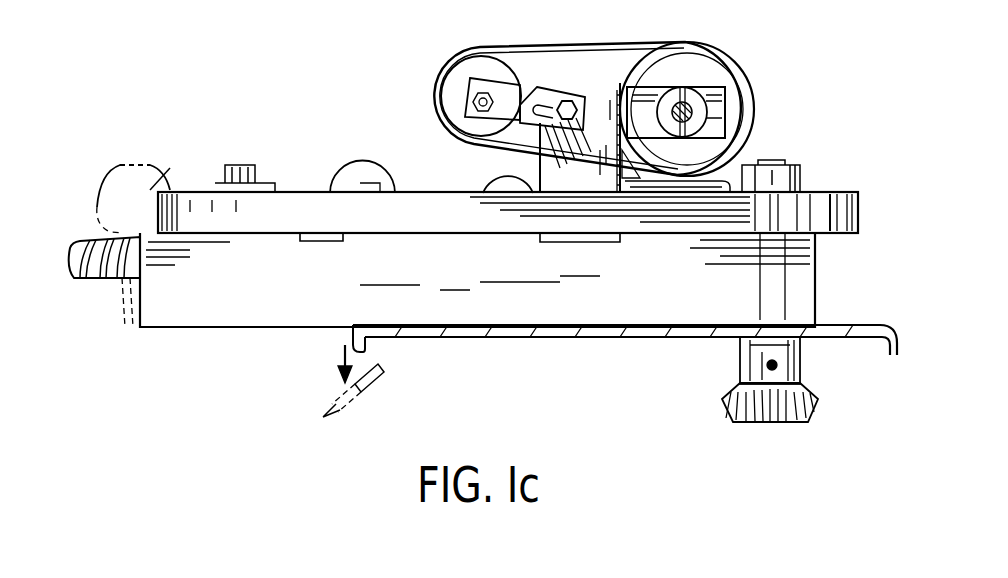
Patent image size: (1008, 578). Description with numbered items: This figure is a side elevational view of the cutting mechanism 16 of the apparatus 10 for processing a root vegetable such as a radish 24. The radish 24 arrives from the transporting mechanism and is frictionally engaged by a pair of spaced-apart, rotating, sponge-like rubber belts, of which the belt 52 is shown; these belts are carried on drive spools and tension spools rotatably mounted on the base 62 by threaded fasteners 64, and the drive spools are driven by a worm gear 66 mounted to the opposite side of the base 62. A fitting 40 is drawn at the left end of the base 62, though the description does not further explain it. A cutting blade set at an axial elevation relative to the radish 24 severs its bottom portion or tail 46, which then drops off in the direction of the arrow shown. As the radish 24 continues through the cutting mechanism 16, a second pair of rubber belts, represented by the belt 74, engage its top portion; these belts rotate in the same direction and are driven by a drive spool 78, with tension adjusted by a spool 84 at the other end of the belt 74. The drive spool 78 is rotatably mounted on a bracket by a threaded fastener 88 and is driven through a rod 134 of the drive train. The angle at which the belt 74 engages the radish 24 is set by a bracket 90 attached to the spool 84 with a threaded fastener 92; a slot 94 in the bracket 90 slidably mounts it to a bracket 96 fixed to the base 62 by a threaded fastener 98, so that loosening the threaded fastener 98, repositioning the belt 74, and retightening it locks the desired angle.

The apparatus 10 is at (146, 90).
The cutting mechanism 16 is at (833, 85).
The radish 24 is at (163, 172).
The hose fitting 40 is at (83, 278).
The tail 46 is at (372, 377).
The belt 52 is at (830, 216).
The base 62 is at (190, 310).
The threaded fasteners 64 is at (250, 172).
The worm gear 66 is at (800, 370).
The belt 74 is at (500, 48).
The drive spool 78 is at (713, 75).
The spool 84 is at (442, 110).
The threaded fastener 88 is at (704, 116).
The bracket 90 is at (525, 95).
The threaded fastener 92 is at (480, 96).
The slot 94 is at (548, 105).
The bracket 96 is at (628, 82).
The threaded fastener 98 is at (588, 104).
The rod 134 is at (683, 102).